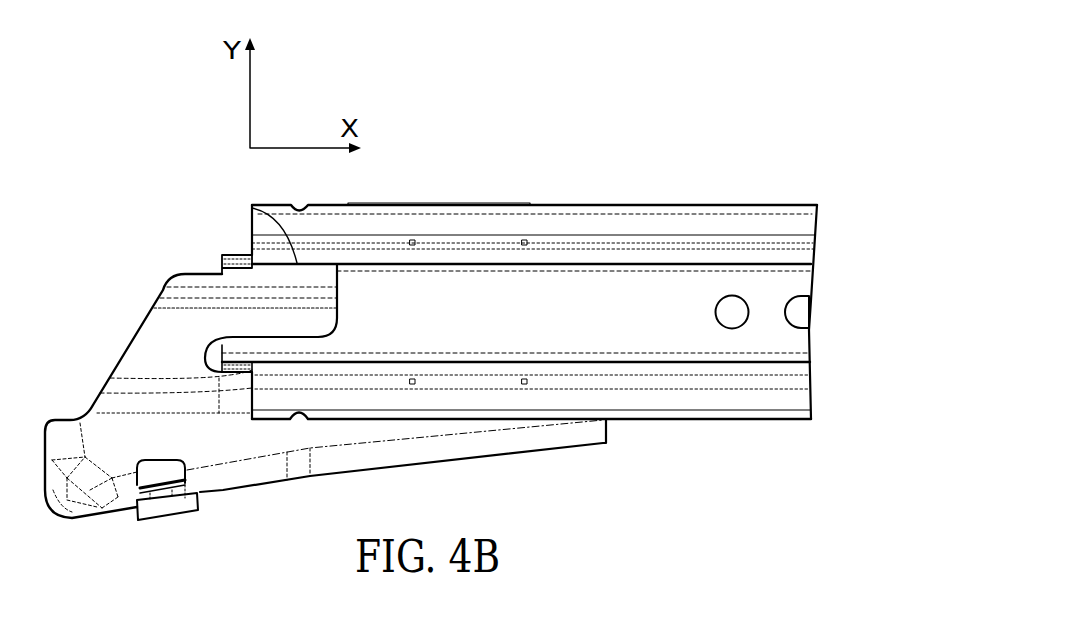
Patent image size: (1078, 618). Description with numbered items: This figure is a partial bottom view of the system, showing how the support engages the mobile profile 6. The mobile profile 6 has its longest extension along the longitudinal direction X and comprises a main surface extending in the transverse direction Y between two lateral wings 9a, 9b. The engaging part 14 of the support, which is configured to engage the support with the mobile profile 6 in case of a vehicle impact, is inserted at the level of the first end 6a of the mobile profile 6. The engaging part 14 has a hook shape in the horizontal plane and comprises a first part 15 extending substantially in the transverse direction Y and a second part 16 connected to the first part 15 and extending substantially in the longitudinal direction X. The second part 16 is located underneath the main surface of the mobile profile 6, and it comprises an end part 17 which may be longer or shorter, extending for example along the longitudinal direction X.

The mobile profile 6 is at (651, 466).
The first end 6a is at (180, 234).
The lateral wing 9a is at (513, 222).
The lateral wing 9b is at (685, 402).
The engaging part 14 is at (132, 284).
The first part 15 is at (147, 345).
The second part 16 is at (302, 305).
The end part 17 is at (252, 208).